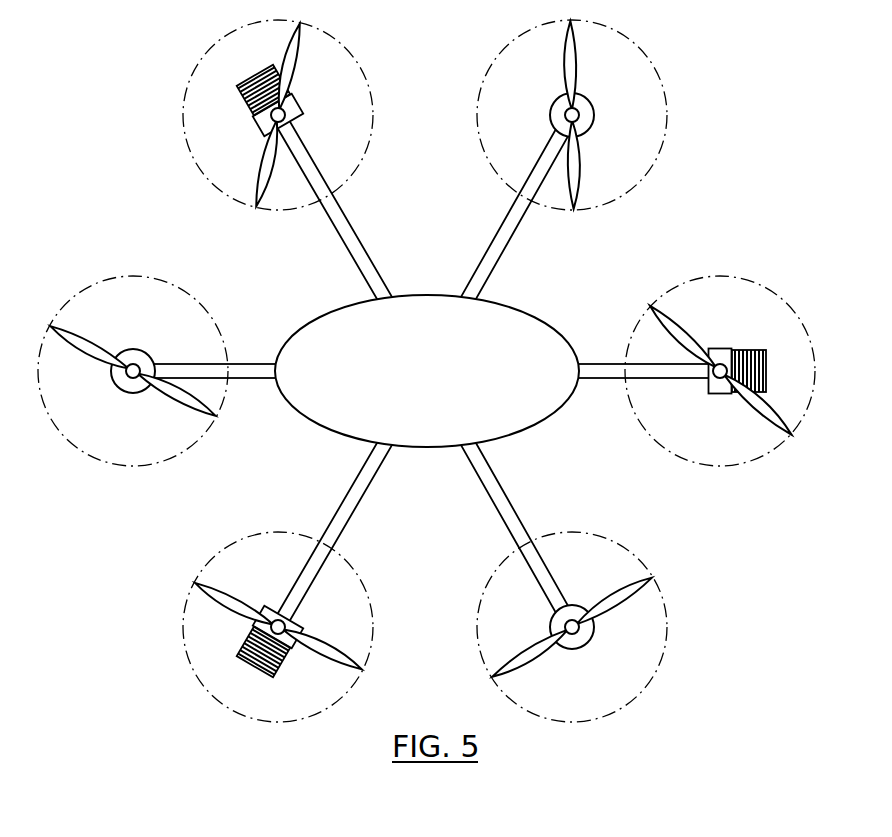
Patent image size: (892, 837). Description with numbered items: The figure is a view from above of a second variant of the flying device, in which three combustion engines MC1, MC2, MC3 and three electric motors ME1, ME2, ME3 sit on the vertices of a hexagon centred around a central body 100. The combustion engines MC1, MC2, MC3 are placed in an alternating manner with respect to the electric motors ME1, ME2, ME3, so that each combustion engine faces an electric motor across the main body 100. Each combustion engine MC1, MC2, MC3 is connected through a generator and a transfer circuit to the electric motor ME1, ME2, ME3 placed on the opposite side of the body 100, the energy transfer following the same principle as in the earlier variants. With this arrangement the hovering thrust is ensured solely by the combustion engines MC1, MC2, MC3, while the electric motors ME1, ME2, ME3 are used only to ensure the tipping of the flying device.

The central body 100 is at (540, 312).
The combustion engine MC1 is at (710, 394).
The combustion engine MC2 is at (267, 612).
The combustion engine MC3 is at (295, 97).
The electric motor ME1 is at (111, 371).
The electric motor ME2 is at (594, 107).
The electric motor ME3 is at (595, 630).